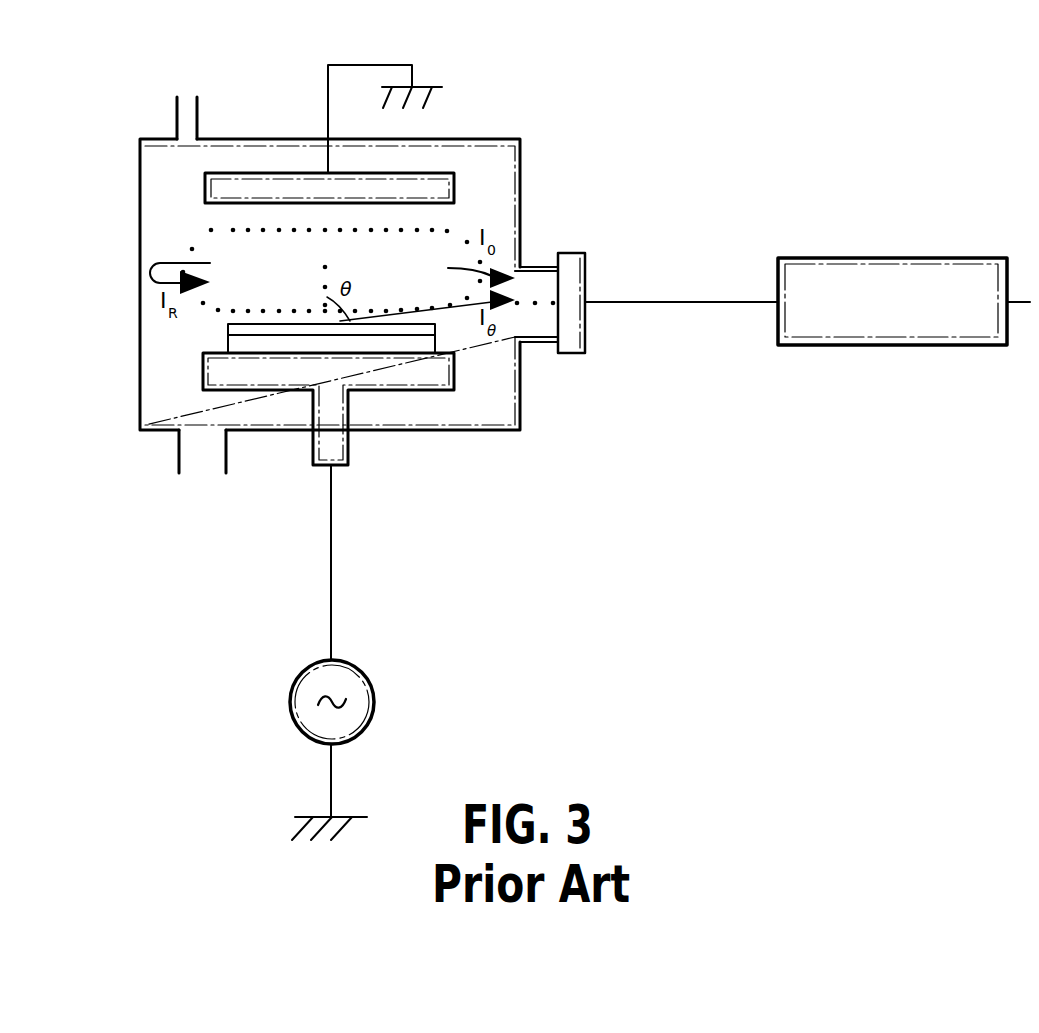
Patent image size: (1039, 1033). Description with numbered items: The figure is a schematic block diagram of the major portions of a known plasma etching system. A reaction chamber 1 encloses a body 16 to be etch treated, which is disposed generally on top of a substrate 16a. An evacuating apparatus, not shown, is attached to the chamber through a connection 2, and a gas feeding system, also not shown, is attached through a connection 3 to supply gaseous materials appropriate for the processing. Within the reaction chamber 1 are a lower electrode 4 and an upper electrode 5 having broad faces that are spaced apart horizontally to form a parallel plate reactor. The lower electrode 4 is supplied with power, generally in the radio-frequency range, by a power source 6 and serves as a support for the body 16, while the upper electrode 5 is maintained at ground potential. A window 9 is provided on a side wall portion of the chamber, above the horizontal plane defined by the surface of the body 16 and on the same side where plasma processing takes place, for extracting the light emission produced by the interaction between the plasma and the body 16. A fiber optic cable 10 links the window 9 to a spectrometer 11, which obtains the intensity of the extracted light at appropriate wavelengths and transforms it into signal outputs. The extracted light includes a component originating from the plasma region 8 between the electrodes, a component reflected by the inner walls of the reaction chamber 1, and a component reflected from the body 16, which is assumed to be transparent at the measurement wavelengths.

The reaction chamber 1 is at (528, 159).
The connection 2 is at (201, 457).
The connection 3 is at (187, 105).
The lower electrode 4 is at (456, 370).
The upper electrode 5 is at (433, 172).
The power source 6 is at (358, 667).
The plasma region 8 is at (200, 235).
The window 9 is at (586, 268).
The fiber optic cable 10 is at (705, 302).
The spectrometer 11 is at (875, 258).
The body 16 is at (230, 336).
The substrate 16a is at (436, 345).